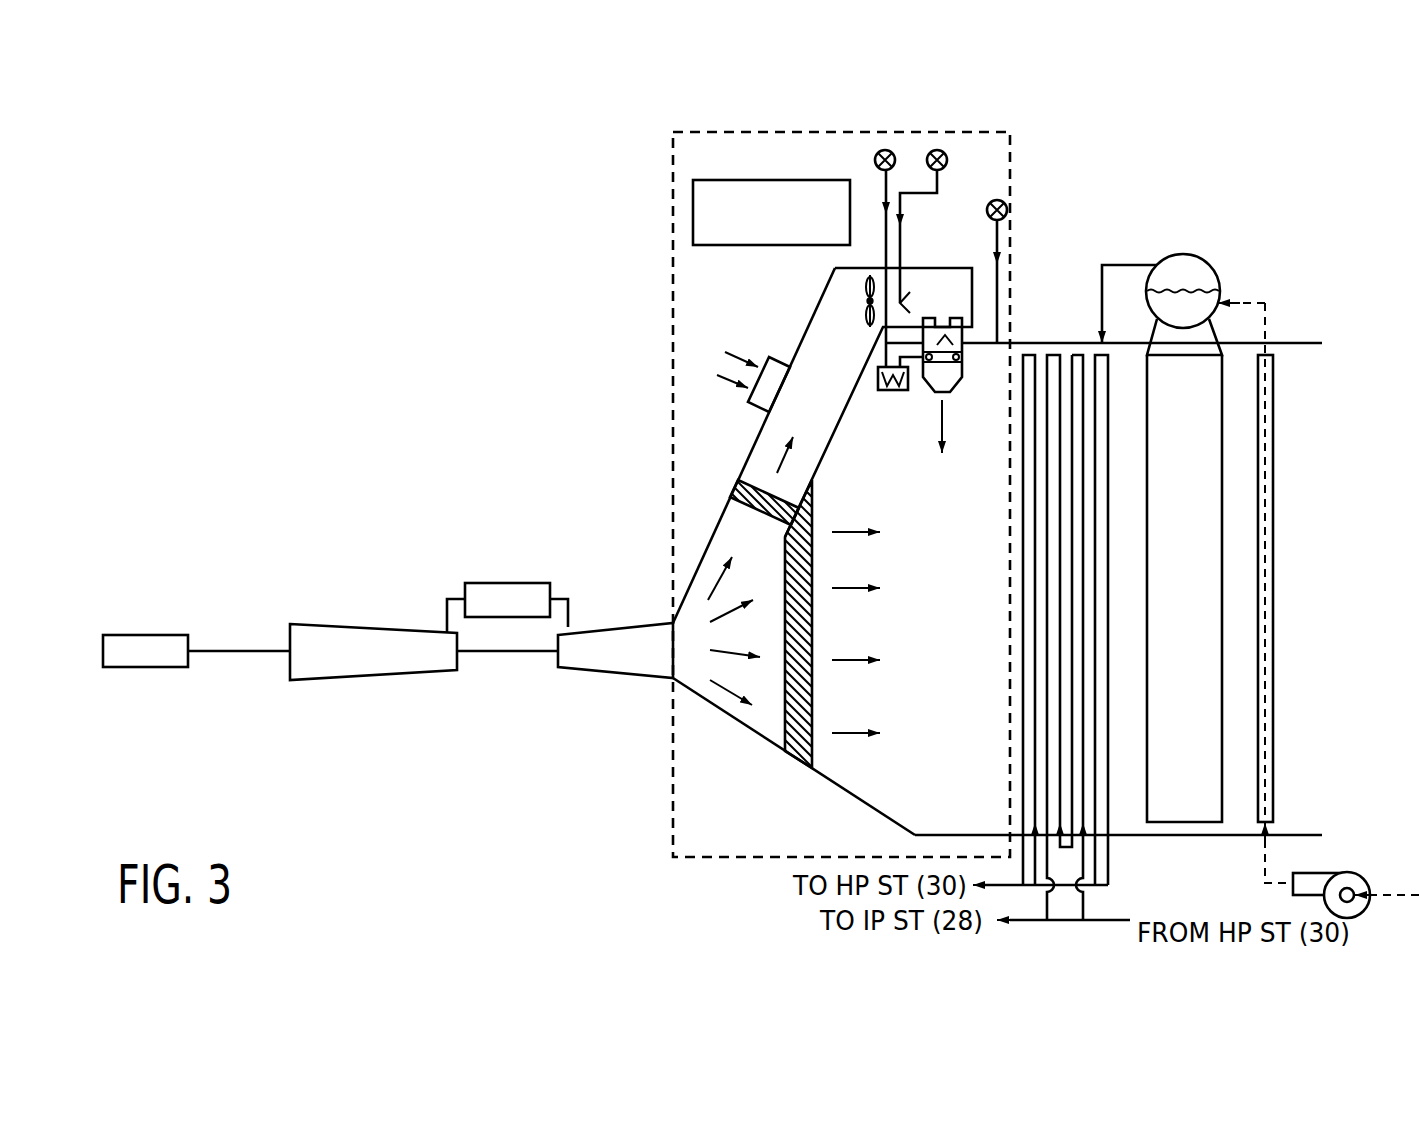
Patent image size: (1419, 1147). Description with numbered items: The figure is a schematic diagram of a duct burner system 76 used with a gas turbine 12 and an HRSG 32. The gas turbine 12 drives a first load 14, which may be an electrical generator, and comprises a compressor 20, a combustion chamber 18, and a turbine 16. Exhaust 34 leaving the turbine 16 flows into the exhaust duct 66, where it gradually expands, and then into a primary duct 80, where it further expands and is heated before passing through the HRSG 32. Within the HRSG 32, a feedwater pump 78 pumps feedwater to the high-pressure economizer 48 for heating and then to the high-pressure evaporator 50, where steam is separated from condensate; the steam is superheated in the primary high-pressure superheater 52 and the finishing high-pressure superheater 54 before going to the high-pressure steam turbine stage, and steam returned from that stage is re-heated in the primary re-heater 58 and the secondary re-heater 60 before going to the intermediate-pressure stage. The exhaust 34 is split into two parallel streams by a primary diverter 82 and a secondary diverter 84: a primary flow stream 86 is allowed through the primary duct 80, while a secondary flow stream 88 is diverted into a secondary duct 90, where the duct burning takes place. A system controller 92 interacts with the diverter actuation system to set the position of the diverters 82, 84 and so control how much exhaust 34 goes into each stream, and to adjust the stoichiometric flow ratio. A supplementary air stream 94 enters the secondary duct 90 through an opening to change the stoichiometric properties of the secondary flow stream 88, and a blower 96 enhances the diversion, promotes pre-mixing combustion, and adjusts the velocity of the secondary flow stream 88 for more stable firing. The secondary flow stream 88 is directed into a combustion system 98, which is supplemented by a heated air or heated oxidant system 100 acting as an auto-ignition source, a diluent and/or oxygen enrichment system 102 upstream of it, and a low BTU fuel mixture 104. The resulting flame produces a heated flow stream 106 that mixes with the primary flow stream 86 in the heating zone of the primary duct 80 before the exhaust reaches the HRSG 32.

The gas turbine 12 is at (437, 738).
The first load 14 is at (145, 635).
The turbine 16 is at (614, 630).
The combustion chamber 18 is at (507, 583).
The compressor 20 is at (372, 626).
The HRSG 32 is at (1303, 343).
The exhaust 34 is at (702, 668).
The high-pressure economizer 48 is at (1273, 590).
The high-pressure evaporator 50 is at (1210, 263).
The primary high-pressure superheater 52 is at (1108, 690).
The finishing high-pressure superheater 54 is at (1022, 668).
The primary re-heater 58 is at (1083, 750).
The secondary re-heater 60 is at (1047, 757).
The exhaust duct 66 is at (703, 557).
The duct burner system 76 is at (620, 160).
The feedwater pump 78 is at (1350, 873).
The primary duct 80 is at (853, 795).
The primary diverter 82 is at (793, 759).
The secondary diverter 84 is at (733, 482).
The primary flow stream 86 is at (872, 680).
The secondary flow stream 88 is at (763, 433).
The secondary duct 90 is at (814, 313).
The system controller 92 is at (770, 180).
The supplementary air stream 94 is at (741, 350).
The blower 96 is at (865, 298).
The combustion system 98 is at (962, 368).
The heated air or heated oxidant system 100 is at (882, 150).
The diluent and/or oxygen enrichment system 102 is at (932, 150).
The low BTU fuel mixture 104 is at (1003, 202).
The heated flow stream 106 is at (940, 424).